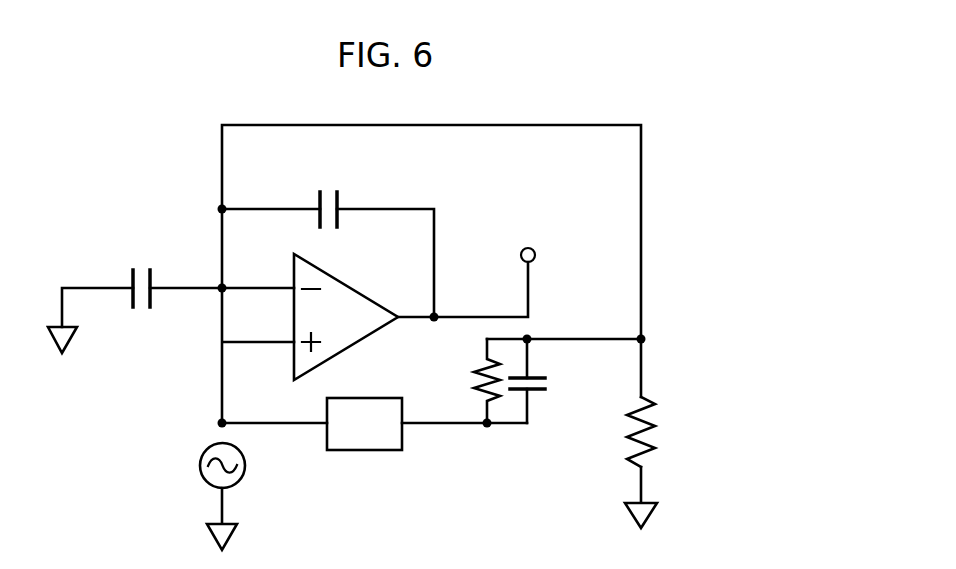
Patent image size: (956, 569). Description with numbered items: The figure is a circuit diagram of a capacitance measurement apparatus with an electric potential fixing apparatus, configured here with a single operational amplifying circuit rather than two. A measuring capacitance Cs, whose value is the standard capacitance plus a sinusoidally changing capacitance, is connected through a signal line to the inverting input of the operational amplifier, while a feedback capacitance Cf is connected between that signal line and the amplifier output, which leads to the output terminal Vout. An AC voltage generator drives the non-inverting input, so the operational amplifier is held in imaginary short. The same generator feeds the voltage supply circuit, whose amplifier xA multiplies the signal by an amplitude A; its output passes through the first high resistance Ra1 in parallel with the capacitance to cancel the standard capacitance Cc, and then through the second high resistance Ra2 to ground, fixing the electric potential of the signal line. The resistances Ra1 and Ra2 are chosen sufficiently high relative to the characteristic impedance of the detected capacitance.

The measuring capacitance Cs is at (139, 271).
The feedback capacitance Cf is at (328, 238).
The output terminal Vout is at (557, 251).
The first high resistance Ra1 is at (462, 381).
The capacitance to cancel the standard capacitance Cc is at (543, 381).
The second high resistance Ra2 is at (668, 432).
The amplifier xA is at (364, 424).